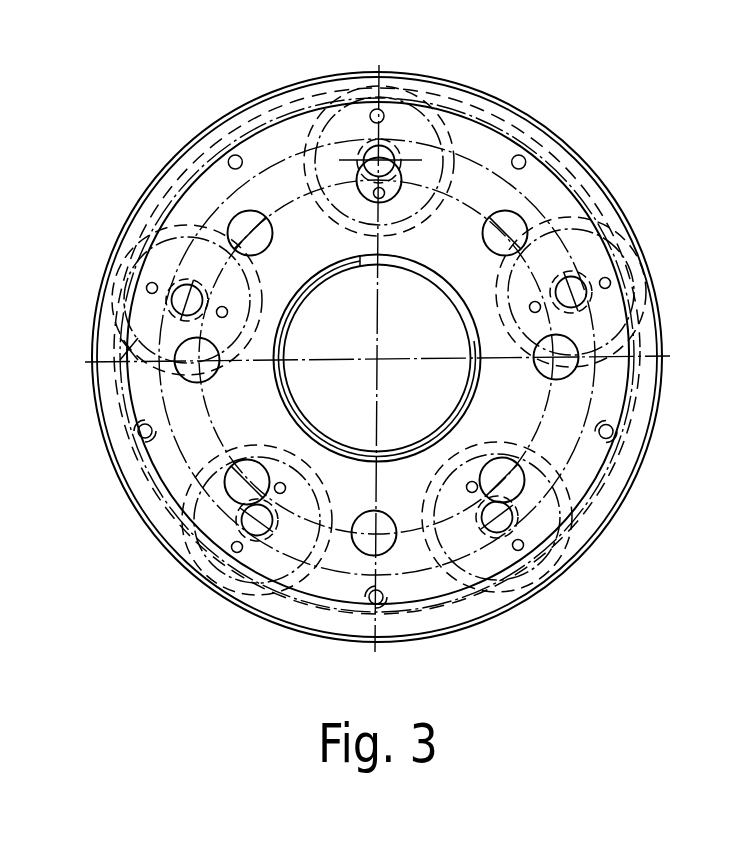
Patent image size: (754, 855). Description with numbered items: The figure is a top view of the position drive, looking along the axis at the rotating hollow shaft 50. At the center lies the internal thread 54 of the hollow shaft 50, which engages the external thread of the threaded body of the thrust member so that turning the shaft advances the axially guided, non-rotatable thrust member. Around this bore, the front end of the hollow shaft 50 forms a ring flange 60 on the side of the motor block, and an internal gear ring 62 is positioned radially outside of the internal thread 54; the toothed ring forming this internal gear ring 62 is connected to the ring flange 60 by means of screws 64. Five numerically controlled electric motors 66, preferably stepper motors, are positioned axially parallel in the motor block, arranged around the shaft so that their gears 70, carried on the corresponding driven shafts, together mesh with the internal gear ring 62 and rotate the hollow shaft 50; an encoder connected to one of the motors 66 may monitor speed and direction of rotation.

The hollow shaft 50 is at (359, 258).
The internal thread 54 is at (313, 432).
The ring flange 60 is at (163, 468).
The internal gear ring 62 is at (636, 417).
The screws 64 is at (612, 440).
The motors 66 is at (532, 112).
The gears 70 is at (592, 308).